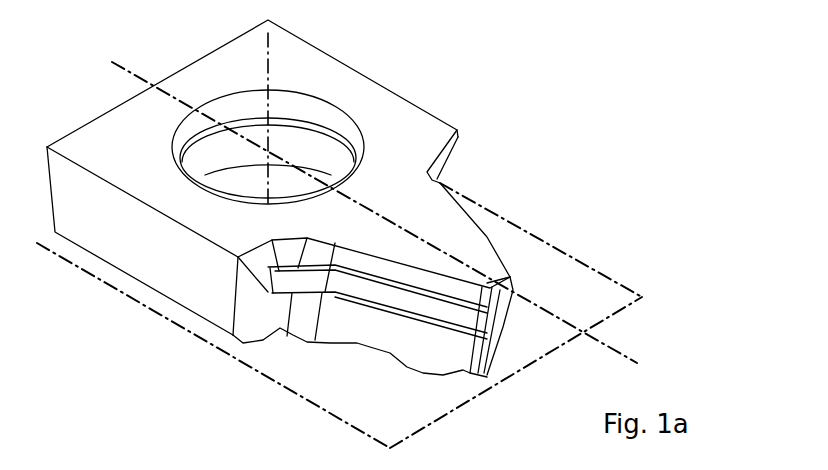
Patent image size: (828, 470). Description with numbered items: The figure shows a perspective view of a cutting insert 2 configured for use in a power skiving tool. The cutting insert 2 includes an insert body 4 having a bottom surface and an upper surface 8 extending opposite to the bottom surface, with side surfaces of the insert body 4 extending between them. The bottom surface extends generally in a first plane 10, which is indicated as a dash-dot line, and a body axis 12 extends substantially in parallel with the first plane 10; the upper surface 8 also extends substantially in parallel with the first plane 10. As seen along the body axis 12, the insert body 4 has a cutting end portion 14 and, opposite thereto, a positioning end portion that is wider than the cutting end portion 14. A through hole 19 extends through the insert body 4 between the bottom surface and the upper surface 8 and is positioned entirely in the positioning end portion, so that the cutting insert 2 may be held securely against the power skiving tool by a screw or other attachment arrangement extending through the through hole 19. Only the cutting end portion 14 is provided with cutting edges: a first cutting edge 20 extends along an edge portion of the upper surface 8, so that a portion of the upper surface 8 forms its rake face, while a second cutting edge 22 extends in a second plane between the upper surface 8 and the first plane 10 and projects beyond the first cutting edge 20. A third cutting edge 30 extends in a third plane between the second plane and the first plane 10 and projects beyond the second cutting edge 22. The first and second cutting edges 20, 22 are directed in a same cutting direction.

The cutting insert 2 is at (354, 226).
The insert body 4 is at (383, 108).
The upper surface 8 is at (105, 154).
The first plane 10 is at (307, 383).
The body axis 12 is at (620, 355).
The cutting end portion 14 is at (83, 469).
The through hole 19 is at (309, 139).
The first cutting edge 20 is at (475, 222).
The second cutting edge 22 is at (513, 300).
The third cutting edge 30 is at (505, 333).